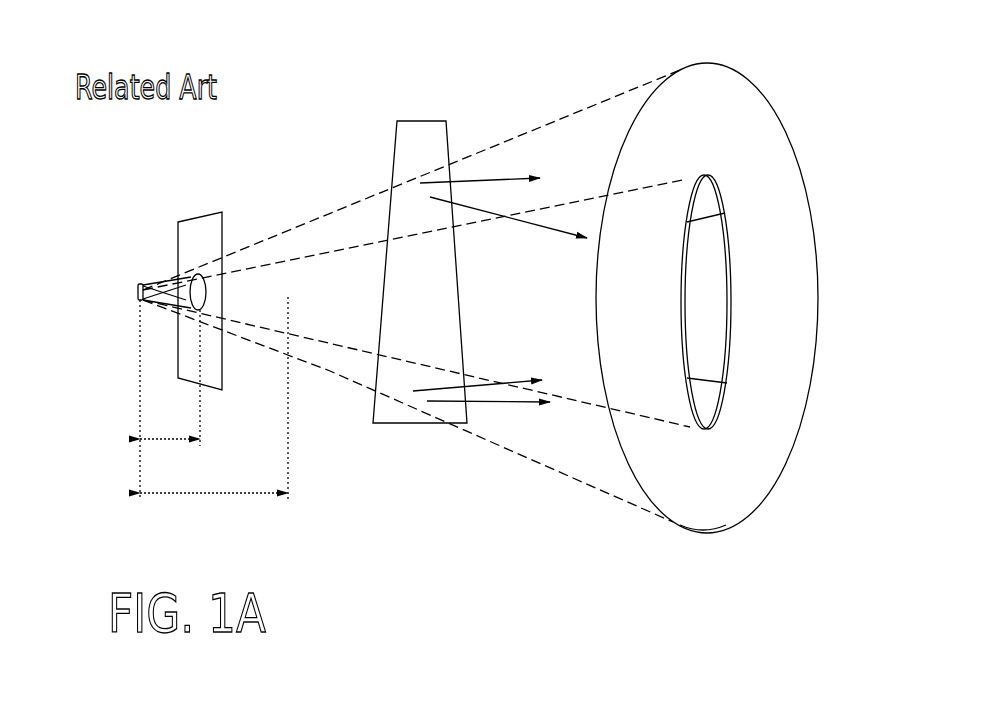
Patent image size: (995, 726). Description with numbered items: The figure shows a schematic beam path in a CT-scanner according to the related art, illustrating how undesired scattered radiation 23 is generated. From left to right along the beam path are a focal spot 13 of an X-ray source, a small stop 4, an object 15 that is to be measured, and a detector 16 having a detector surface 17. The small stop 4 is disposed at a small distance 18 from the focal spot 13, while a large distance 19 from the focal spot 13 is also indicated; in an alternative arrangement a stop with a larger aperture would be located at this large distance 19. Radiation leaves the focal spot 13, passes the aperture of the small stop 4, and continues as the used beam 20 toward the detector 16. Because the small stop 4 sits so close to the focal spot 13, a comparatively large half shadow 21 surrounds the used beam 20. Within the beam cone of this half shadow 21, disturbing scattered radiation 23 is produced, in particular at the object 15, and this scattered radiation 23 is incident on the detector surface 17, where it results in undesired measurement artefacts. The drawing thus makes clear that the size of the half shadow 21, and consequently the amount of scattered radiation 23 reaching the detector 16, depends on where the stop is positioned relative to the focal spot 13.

The small stop 4 is at (199, 233).
The focal spot 13 is at (128, 288).
The object 15 is at (395, 404).
The detector 16 is at (712, 544).
The detector surface 17 is at (713, 370).
The small distance 18 is at (170, 400).
The large distance 19 is at (214, 398).
The used beam 20 is at (568, 200).
The half shadow 21 is at (738, 113).
The scattered radiation 23 is at (517, 219).